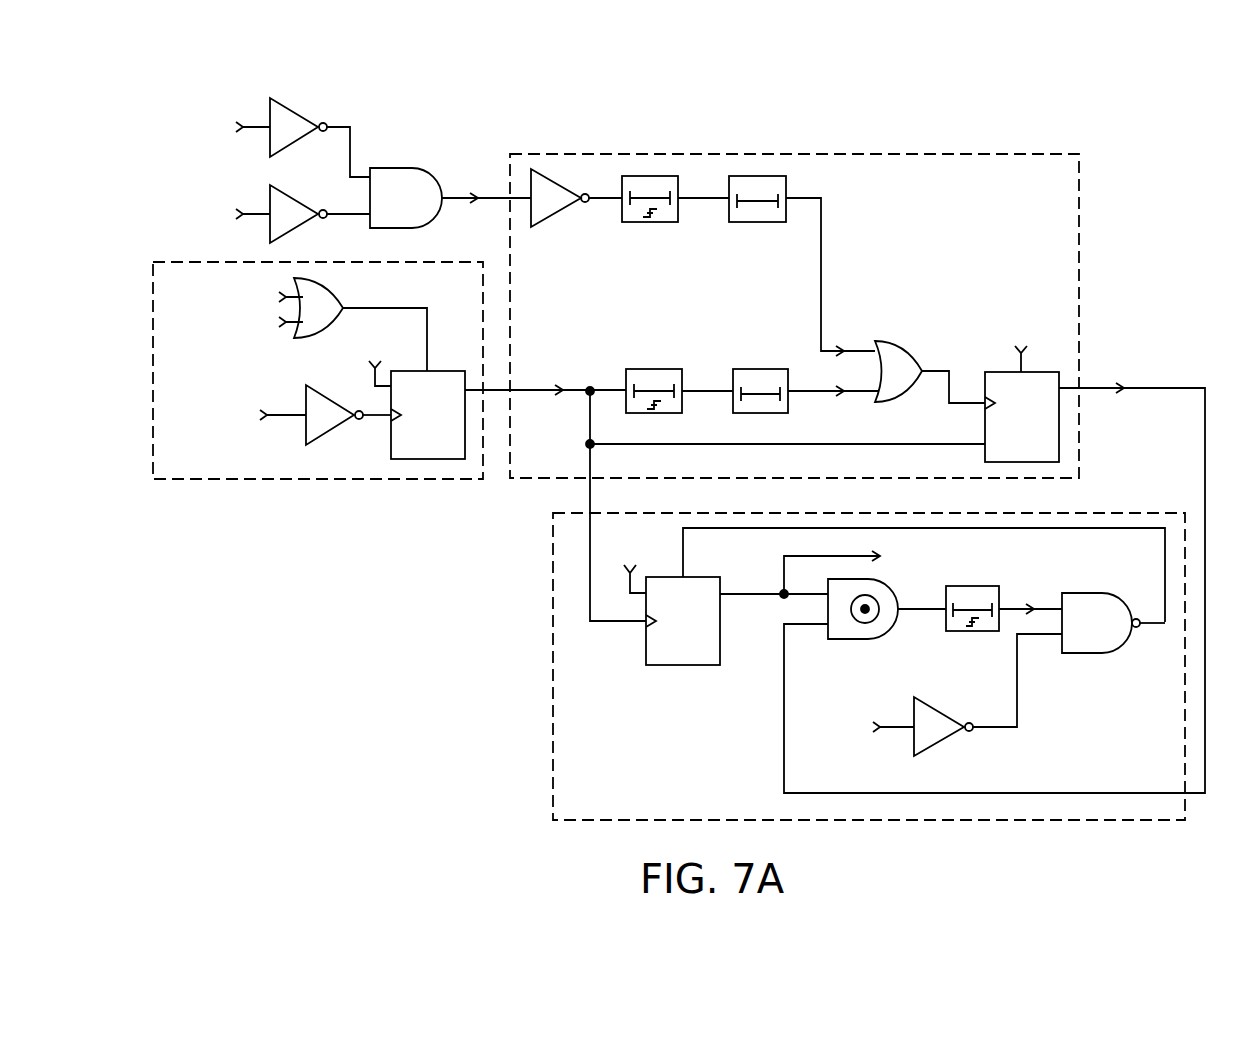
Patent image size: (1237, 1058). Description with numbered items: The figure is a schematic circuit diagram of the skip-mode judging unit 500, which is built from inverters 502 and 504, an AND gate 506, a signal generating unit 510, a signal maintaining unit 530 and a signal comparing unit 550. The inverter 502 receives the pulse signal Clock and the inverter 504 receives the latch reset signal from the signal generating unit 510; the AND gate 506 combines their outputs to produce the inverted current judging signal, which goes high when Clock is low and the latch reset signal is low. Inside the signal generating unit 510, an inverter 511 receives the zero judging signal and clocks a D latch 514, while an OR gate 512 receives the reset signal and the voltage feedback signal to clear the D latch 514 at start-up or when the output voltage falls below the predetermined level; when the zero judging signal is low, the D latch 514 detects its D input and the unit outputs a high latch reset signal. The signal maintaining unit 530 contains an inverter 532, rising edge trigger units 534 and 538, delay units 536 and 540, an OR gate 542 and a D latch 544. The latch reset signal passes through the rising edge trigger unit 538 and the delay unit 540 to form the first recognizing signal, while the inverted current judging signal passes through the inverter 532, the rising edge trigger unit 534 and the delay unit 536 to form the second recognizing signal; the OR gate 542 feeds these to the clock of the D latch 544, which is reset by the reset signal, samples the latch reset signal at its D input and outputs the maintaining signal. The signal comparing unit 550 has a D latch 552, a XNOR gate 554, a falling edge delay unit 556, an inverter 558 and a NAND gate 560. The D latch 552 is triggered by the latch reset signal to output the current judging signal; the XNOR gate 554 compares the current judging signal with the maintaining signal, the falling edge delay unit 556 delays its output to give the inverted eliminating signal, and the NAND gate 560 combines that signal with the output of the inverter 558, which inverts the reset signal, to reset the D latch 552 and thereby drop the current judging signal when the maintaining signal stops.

The skip-mode judging unit 500 is at (148, 86).
The inverter 502 is at (295, 120).
The inverter 504 is at (296, 203).
The AND gate 506 is at (416, 168).
The signal generating unit 510 is at (297, 480).
The inverter 511 is at (338, 397).
The OR gate 512 is at (340, 306).
The D latch 514 is at (390, 448).
The signal maintaining unit 530 is at (603, 160).
The inverter 532 is at (548, 212).
The rising edge trigger unit 534 is at (661, 219).
The delay unit 536 is at (750, 219).
The rising edge trigger unit 538 is at (650, 368).
The delay unit 540 is at (752, 368).
The OR gate 542 is at (890, 340).
The D latch 544 is at (1000, 372).
The signal comparing unit 550 is at (555, 705).
The D latch 552 is at (650, 665).
The XNOR gate 554 is at (848, 636).
The falling edge delay unit 556 is at (958, 631).
The inverter 558 is at (938, 733).
The NAND gate 560 is at (1108, 648).